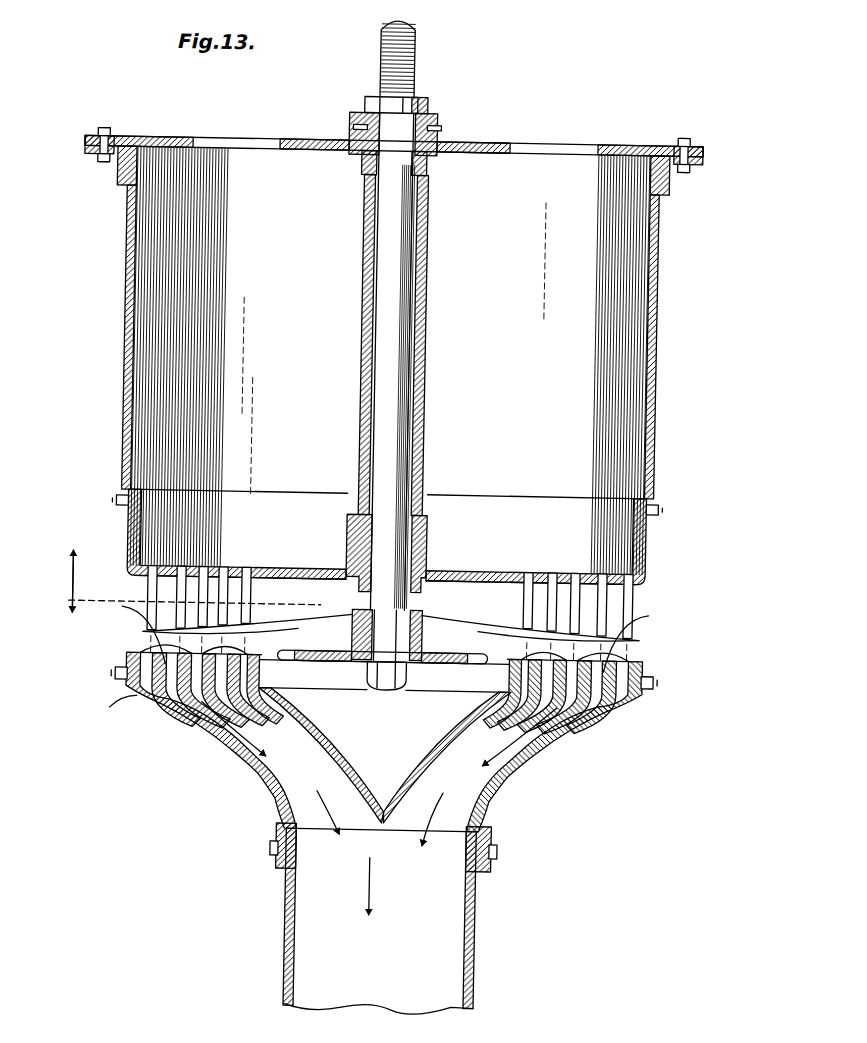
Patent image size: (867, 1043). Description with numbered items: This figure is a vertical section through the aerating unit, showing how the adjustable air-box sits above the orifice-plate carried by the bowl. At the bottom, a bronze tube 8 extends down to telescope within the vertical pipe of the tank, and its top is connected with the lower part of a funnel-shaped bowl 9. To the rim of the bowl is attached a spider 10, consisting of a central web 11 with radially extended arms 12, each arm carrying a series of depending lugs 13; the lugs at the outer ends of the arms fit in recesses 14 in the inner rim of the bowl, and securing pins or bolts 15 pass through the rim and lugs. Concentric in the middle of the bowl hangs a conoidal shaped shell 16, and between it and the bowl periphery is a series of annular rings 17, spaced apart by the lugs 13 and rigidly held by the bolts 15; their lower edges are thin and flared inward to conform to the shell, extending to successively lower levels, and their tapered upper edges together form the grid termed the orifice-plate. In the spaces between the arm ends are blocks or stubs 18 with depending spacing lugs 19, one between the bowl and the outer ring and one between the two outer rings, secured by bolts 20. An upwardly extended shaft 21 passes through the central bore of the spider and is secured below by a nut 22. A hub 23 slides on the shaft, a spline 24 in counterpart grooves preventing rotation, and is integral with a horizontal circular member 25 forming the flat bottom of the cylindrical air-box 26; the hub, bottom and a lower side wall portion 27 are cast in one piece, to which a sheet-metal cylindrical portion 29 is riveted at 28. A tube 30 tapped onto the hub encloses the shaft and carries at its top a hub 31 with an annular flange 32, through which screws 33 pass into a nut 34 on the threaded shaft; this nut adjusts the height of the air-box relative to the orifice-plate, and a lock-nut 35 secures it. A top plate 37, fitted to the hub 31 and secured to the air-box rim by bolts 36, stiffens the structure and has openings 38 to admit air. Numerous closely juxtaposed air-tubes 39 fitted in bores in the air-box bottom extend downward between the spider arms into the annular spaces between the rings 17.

The bronze tube 8 is at (482, 925).
The funnel-shaped bowl 9 is at (241, 767).
The spider 10 is at (424, 618).
The central web 11 is at (333, 664).
The arms 12 is at (306, 628).
The depending lugs 13 is at (165, 712).
The recesses 14 is at (175, 582).
The securing pins or bolts 15 is at (656, 678).
The conoidal shaped shell 16 is at (347, 773).
The annular rings 17 is at (592, 723).
The blocks or stubs 18 is at (162, 657).
The spacing lugs 19 is at (109, 709).
The bolts 20 is at (118, 678).
The shaft 21 is at (410, 56).
The nut 22 is at (397, 684).
The hub 23 is at (347, 535).
The spline 24 is at (427, 530).
The horizontal circular member 25 is at (505, 572).
The air-box 26 is at (414, 361).
The side wall portion 27 is at (647, 537).
The rivets 28 is at (116, 504).
The sheet-metal cylindrical portion 29 is at (120, 236).
The tube 30 is at (358, 262).
The hub 31 is at (422, 162).
The annular flange 32 is at (350, 116).
The screws 33 is at (346, 127).
The nut 34 is at (368, 103).
The lock-nut 35 is at (422, 100).
The bolts 36 is at (96, 130).
The top plate 37 is at (630, 141).
The openings 38 is at (216, 141).
The air-tubes 39 is at (160, 605).